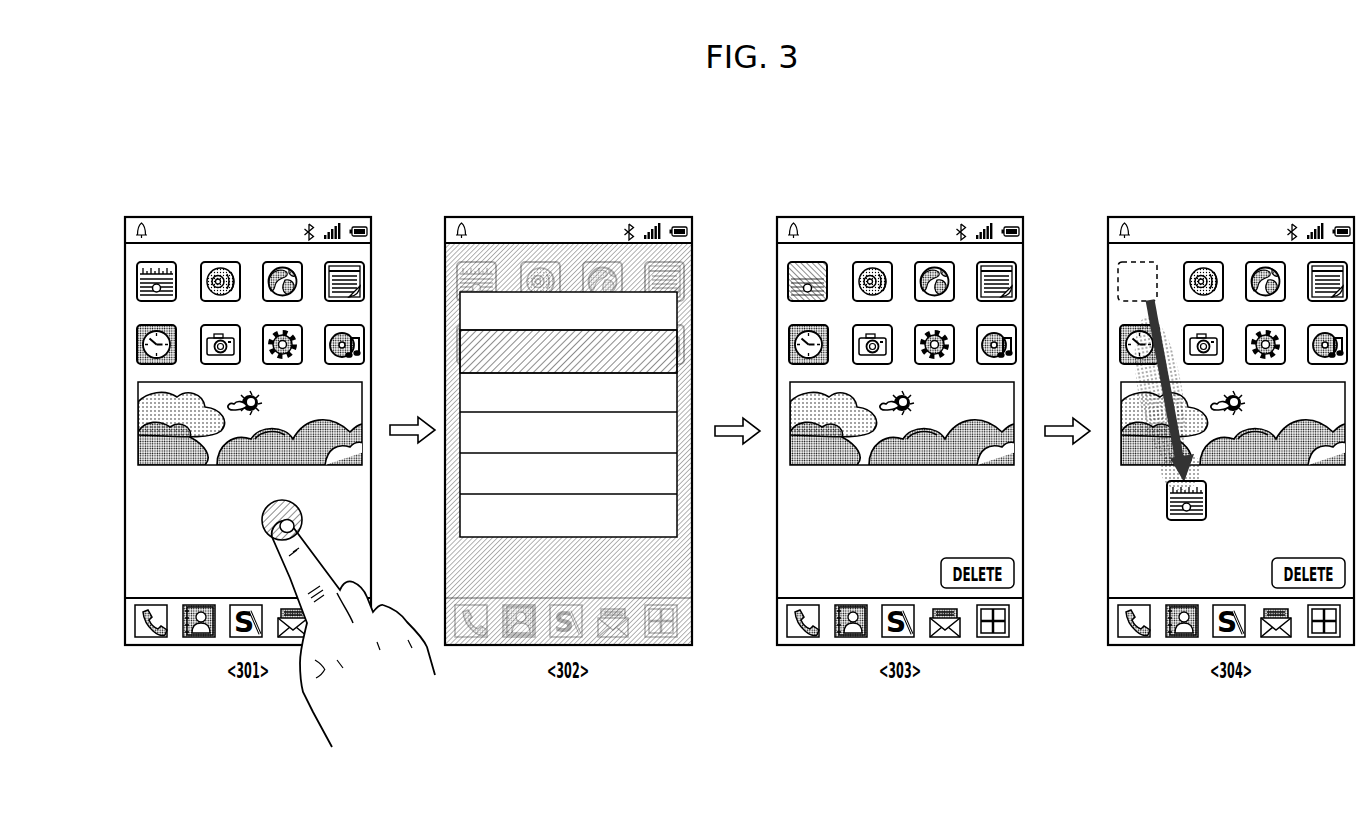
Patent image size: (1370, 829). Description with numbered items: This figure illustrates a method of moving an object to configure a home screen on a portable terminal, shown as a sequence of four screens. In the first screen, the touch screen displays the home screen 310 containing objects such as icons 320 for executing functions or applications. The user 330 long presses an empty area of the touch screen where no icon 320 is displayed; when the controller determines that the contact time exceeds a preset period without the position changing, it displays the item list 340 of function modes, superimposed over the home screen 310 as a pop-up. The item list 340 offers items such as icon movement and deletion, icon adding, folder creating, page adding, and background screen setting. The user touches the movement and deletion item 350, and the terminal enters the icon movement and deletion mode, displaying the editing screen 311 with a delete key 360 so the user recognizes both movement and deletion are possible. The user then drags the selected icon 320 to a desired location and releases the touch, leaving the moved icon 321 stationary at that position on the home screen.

The home screen 310 is at (125, 213).
The mobile terminal (move and delete mode screen 303) 311 is at (777, 213).
The icon 320 is at (137, 278).
The moved icon 321 is at (1167, 489).
The user 330 is at (312, 708).
The item list 340 is at (460, 318).
The movement and deletion item 350 is at (678, 345).
The delete key 360 is at (1015, 572).